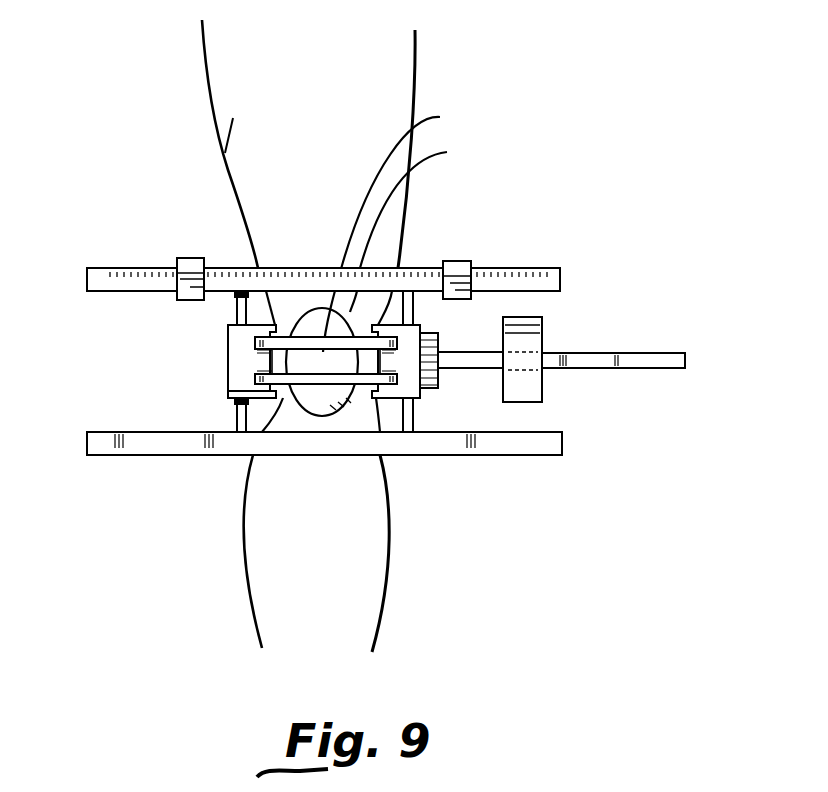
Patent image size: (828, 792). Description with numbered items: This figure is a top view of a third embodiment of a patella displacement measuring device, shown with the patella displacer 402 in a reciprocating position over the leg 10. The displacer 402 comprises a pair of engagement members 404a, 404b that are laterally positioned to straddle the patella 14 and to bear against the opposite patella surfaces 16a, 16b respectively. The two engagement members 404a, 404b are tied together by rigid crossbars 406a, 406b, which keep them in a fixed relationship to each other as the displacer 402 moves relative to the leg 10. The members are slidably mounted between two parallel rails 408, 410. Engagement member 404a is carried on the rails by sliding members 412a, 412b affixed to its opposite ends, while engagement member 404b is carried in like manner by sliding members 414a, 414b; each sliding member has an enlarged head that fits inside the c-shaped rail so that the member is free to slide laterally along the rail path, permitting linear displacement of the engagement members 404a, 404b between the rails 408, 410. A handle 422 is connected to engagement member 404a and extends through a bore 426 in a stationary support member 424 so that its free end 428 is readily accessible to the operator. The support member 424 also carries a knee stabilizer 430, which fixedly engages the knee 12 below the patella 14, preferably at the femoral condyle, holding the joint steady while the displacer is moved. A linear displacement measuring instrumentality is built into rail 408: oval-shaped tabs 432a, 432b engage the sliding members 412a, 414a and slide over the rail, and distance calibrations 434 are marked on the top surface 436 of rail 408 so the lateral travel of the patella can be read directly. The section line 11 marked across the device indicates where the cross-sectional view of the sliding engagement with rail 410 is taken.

The leg 10 is at (400, 59).
The section line 11 is at (250, 375).
The knee 12 is at (447, 152).
The patella 14 is at (440, 117).
The patella surface 16a is at (352, 400).
The patella surface 16b is at (258, 452).
The patella displacer 402 is at (252, 268).
The engagement member 404a is at (415, 330).
The engagement member 404b is at (258, 353).
The rigid crossbar 406a is at (230, 326).
The rigid crossbar 406b is at (258, 386).
The rail 408 is at (561, 275).
The rail 410 is at (562, 455).
The sliding member 412a is at (418, 268).
The sliding member 412b is at (413, 420).
The sliding member 414a is at (238, 291).
The sliding member 414b is at (236, 412).
The handle 422 is at (673, 353).
The support member 424 is at (542, 333).
The bore 426 is at (522, 365).
The free end 428 is at (687, 366).
The knee stabilizer 430 is at (437, 378).
The oval-shaped tab 432a is at (470, 262).
The oval-shaped tab 432b is at (182, 258).
The distance calibrations 434 is at (537, 268).
The top surface 436 is at (560, 291).